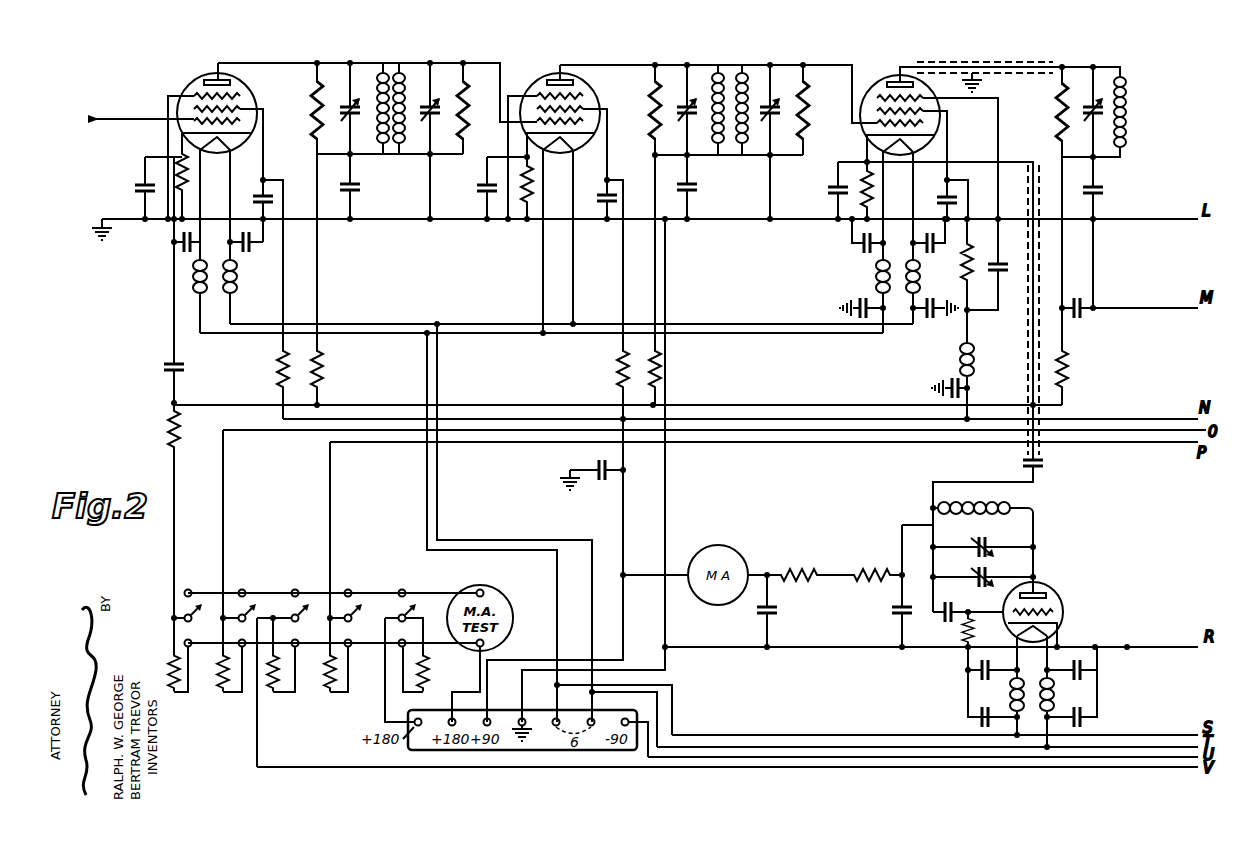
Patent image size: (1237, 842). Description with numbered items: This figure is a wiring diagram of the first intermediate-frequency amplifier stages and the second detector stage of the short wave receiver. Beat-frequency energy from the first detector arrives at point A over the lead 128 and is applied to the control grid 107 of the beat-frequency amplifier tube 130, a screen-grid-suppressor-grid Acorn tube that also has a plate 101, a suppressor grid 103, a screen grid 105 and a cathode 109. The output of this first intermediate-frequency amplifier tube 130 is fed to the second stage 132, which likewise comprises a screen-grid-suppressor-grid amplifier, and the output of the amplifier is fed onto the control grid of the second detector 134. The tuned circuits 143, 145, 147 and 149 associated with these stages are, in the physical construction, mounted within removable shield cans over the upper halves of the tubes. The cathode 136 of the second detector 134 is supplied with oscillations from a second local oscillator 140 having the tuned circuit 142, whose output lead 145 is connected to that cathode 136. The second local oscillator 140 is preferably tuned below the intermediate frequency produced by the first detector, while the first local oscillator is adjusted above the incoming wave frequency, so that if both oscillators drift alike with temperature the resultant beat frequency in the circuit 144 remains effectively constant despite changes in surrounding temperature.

The lead 128 is at (146, 117).
The beat-frequency amplifier tube 130 is at (249, 95).
The plate 101 is at (226, 79).
The suppressor grid 103 is at (242, 95).
The screen grid 105 is at (248, 109).
The control grid 107 is at (248, 121).
The cathode 109 is at (243, 134).
The tuned circuit 143 is at (366, 74).
The tuned circuit 145 is at (414, 72).
The second stage 132 is at (540, 74).
The tuned circuit 147 is at (700, 74).
The tuned circuit 149 is at (753, 75).
The second detector 134 is at (972, 96).
The cathode 136 is at (872, 135).
The circuit 144 is at (1098, 98).
The tuned circuit 142 is at (977, 525).
The second local oscillator 140 is at (1060, 603).